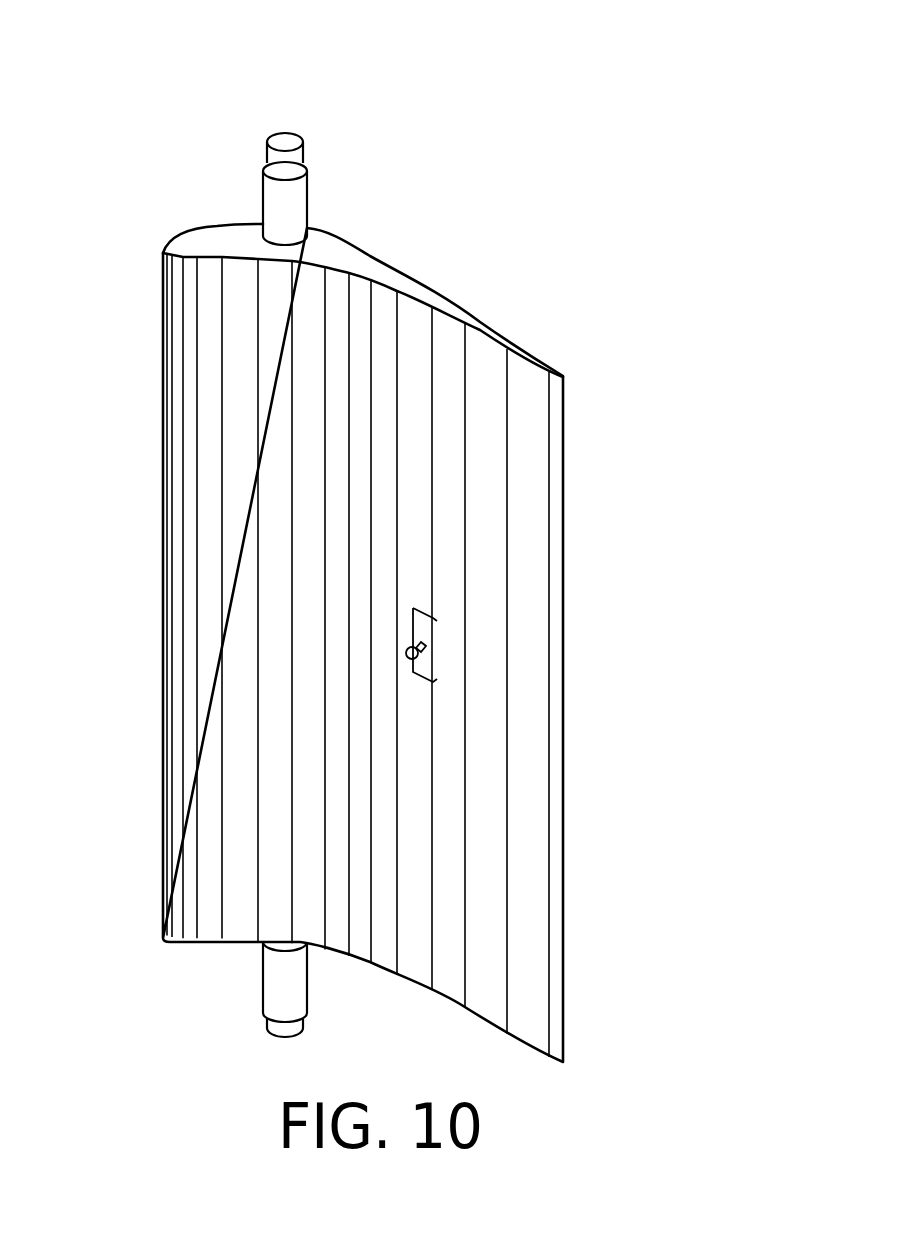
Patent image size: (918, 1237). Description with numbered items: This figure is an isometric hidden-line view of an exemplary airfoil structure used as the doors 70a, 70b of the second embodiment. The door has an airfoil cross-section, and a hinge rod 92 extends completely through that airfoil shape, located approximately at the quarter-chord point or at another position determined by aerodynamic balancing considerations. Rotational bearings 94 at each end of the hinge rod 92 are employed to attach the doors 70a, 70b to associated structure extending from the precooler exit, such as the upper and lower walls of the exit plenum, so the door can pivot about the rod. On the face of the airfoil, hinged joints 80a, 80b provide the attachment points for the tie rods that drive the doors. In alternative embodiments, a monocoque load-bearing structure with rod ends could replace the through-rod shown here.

The door 70a is at (363, 537).
The door 70b is at (492, 370).
The hinged joint 80a is at (599, 623).
The hinged joint 80b is at (423, 647).
The hinge rod 92 is at (280, 138).
The rotational bearings 94 is at (278, 202).